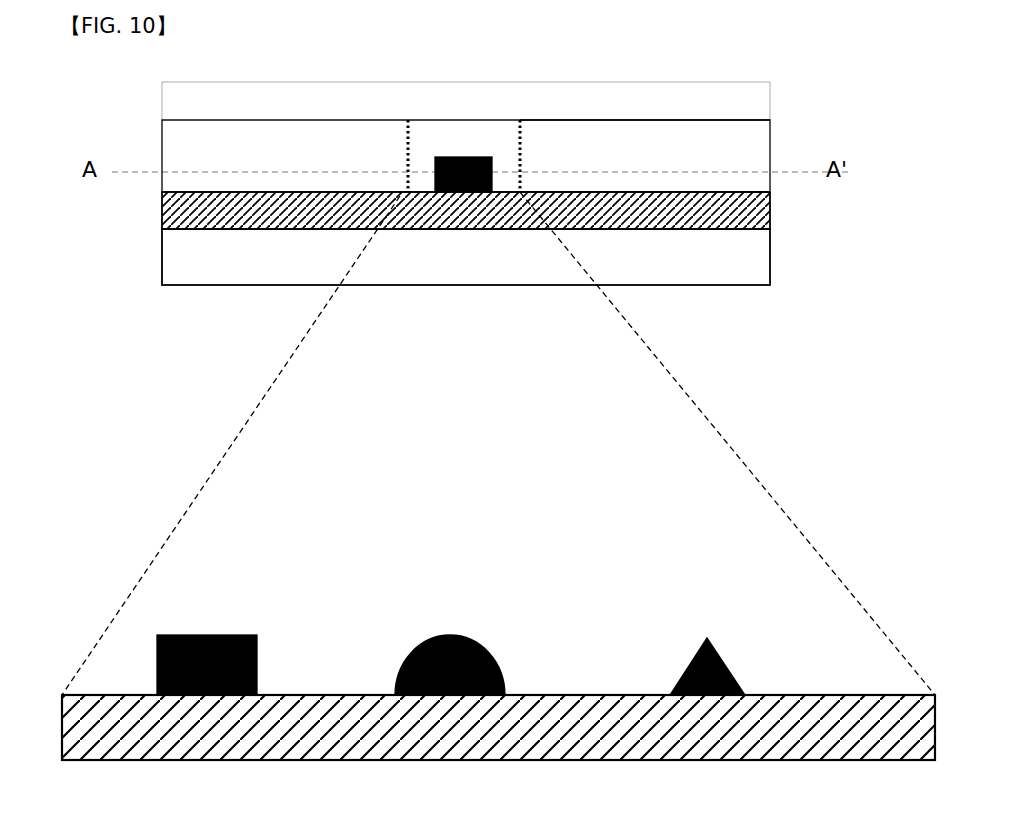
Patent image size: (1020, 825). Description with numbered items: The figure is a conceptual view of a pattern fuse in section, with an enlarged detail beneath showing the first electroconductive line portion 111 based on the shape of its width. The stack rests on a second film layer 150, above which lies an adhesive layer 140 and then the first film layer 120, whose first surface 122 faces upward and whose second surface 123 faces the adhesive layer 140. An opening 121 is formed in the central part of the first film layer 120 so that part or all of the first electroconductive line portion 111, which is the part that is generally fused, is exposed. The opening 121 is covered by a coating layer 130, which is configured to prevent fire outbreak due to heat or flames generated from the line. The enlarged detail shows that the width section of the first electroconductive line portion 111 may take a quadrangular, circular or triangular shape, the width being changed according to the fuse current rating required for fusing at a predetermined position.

The first electroconductive line portion 111 is at (540, 408).
The first film layer 120 is at (531, 156).
The opening 121 is at (476, 141).
The first surface 122 is at (645, 104).
The second surface 123 is at (645, 177).
The coating layer 130 is at (531, 99).
The adhesive layer 140 is at (531, 208).
The second film layer 150 is at (531, 257).